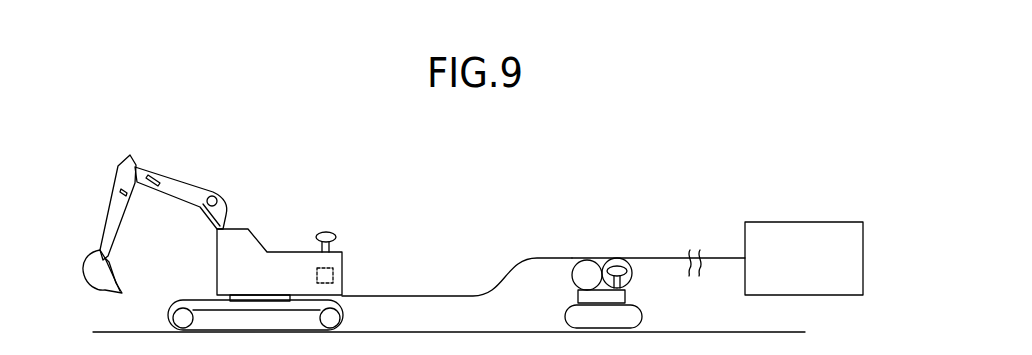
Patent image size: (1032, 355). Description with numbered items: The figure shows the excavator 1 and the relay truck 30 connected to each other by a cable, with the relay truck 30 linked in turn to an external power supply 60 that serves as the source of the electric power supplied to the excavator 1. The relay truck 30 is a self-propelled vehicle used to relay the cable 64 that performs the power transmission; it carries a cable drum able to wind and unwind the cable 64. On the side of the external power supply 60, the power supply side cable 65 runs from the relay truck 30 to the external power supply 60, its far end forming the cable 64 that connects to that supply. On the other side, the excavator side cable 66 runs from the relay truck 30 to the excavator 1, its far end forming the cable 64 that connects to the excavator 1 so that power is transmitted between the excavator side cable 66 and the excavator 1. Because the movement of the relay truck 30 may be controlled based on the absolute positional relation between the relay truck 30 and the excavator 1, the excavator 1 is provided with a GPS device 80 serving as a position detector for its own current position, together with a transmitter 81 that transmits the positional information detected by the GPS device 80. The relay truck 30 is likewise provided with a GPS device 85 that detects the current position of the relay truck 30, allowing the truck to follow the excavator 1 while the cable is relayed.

The excavator 1 is at (285, 190).
The relay truck 30 is at (606, 241).
The external power supply 60 is at (807, 222).
The cable 64 is at (543, 257).
The power supply side cable 65 is at (652, 257).
The excavator side cable 66 is at (448, 293).
The GPS device 80 is at (328, 228).
The transmitter 81 is at (343, 278).
The GPS device 85 is at (632, 277).